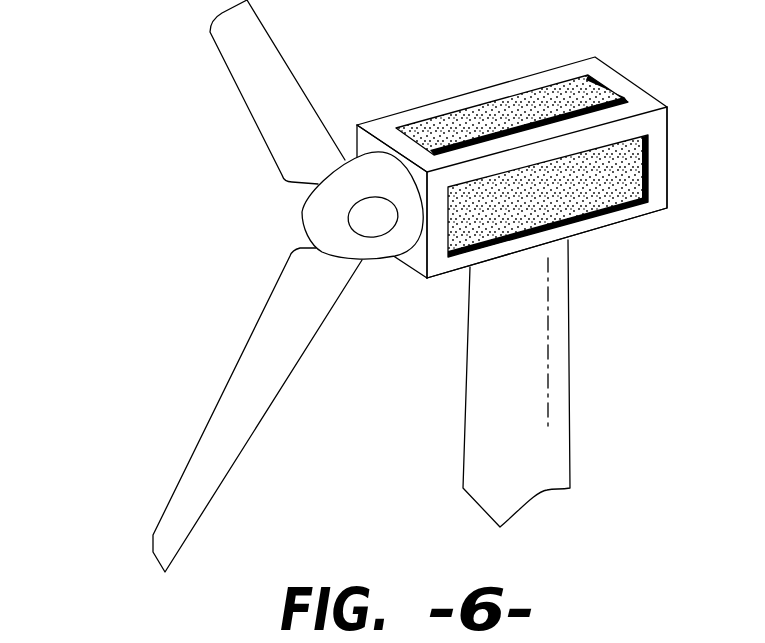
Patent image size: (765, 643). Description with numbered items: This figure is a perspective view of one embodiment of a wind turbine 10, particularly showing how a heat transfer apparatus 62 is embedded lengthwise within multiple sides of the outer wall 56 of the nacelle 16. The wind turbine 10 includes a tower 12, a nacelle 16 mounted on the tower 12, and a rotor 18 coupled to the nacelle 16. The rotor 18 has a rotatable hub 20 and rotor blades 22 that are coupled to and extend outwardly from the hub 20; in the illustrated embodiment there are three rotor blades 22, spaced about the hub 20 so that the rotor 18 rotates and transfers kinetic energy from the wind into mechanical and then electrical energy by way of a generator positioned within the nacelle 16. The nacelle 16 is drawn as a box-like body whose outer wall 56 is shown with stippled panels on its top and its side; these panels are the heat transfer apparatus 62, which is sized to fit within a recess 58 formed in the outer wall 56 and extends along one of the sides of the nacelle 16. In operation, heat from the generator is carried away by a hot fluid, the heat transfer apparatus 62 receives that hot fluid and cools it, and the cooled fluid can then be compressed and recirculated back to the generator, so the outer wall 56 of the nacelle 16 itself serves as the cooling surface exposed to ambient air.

The wind turbine 10 is at (116, 127).
The tower 12 is at (568, 405).
The nacelle 16 is at (544, 152).
The rotor 18 is at (275, 286).
The hub 20 is at (320, 212).
The rotor blade 22 is at (252, 90).
The outer wall 56 is at (380, 130).
The recess 58 is at (645, 182).
The heat transfer apparatus 62 is at (606, 80).